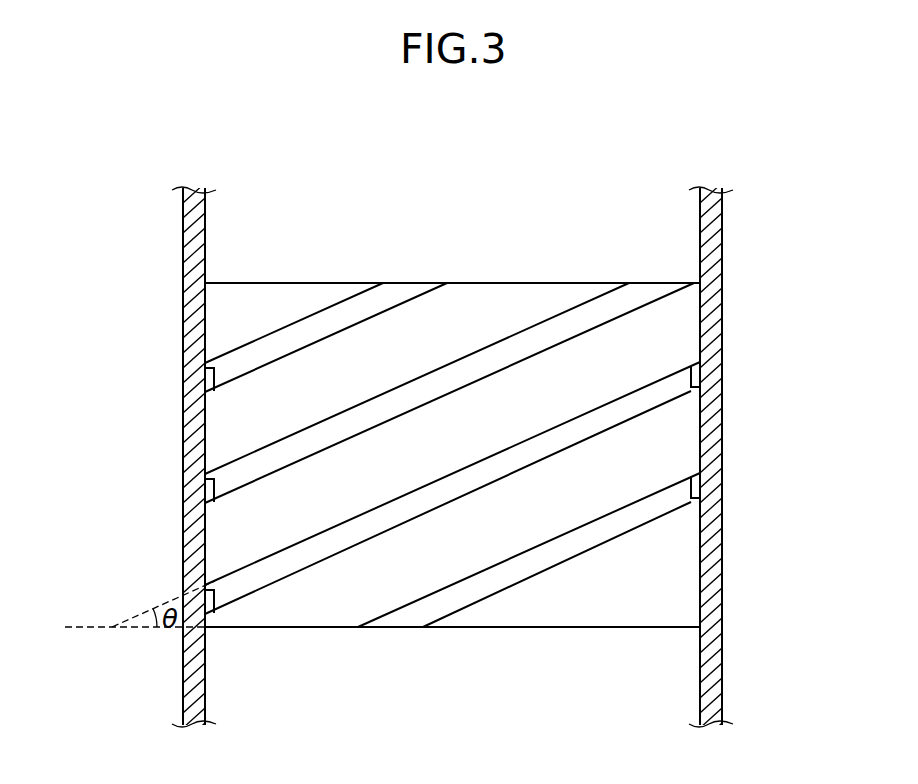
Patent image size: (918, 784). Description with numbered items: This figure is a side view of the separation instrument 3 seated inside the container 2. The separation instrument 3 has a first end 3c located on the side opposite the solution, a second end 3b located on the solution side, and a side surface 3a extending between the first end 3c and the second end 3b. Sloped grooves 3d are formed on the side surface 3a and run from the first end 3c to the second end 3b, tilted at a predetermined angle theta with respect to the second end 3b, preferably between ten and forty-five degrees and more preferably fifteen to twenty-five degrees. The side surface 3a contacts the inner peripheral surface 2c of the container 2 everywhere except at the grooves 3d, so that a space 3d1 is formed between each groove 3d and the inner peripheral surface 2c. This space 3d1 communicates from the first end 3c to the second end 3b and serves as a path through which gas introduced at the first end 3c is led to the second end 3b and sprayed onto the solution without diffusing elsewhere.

The container 2 is at (722, 213).
The inner peripheral surface 2c is at (698, 678).
The separation instrument 3 is at (480, 297).
The side surface 3a is at (702, 445).
The second end 3b is at (660, 631).
The first end 3c is at (606, 279).
The grooves 3d is at (680, 387).
The space 3d1 is at (697, 487).